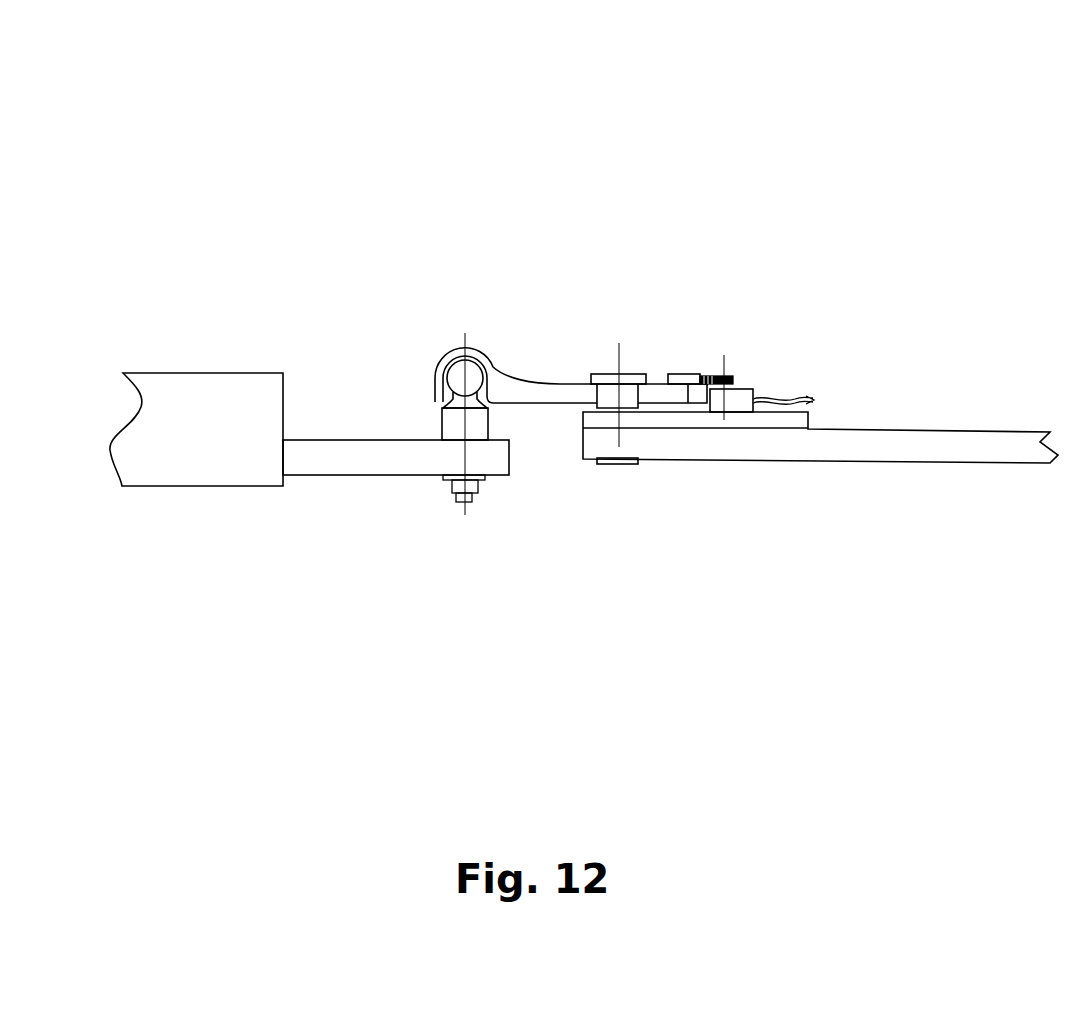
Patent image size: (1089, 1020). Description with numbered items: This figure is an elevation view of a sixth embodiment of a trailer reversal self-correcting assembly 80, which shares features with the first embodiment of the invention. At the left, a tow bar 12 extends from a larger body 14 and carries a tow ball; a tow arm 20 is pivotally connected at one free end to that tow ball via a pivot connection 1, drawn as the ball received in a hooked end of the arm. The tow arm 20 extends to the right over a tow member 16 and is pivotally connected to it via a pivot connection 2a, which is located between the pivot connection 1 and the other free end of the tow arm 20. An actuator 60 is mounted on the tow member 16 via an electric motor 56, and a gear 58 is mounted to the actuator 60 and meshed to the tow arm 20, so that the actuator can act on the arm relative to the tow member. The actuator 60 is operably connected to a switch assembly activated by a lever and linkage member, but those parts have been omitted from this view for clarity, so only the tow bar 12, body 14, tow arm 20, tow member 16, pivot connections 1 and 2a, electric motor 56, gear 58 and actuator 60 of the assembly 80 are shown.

The trailer reversal self-correcting assembly 80 is at (491, 162).
The pivot connection 1 is at (463, 378).
The pivot connection 2a is at (615, 374).
The tow bar 12 is at (350, 460).
The body 14 is at (213, 465).
The tow member 16 is at (842, 448).
The tow arm 20 is at (537, 394).
The electric motor 56 is at (752, 390).
The gear 58 is at (698, 376).
The actuator 60 is at (695, 358).